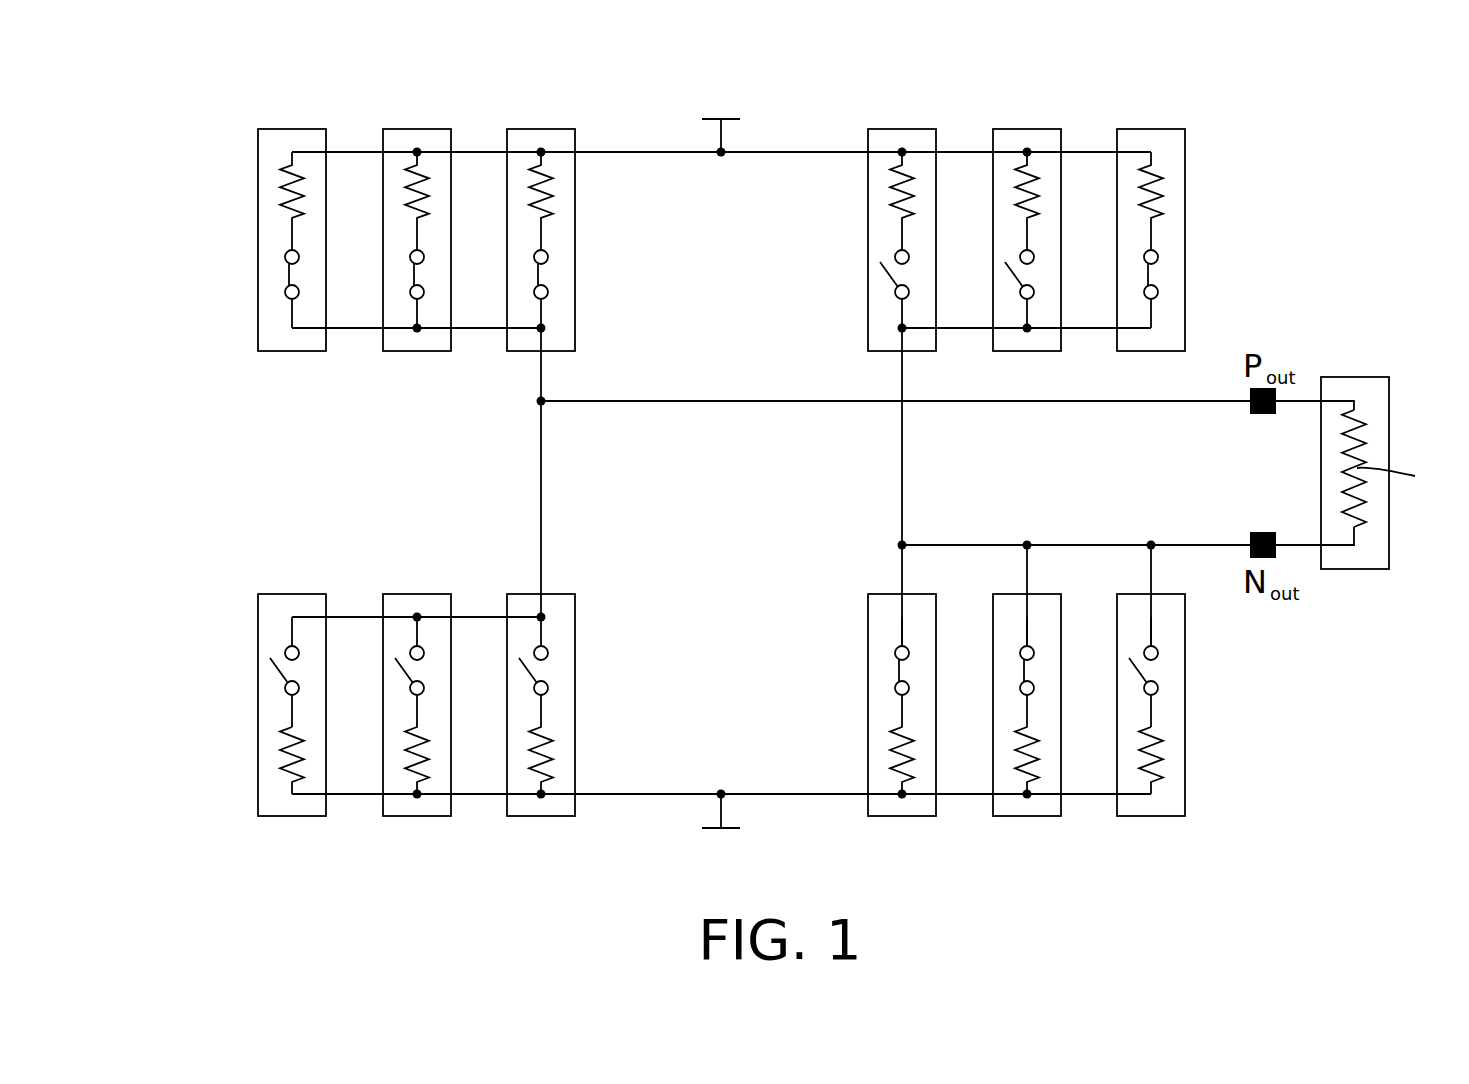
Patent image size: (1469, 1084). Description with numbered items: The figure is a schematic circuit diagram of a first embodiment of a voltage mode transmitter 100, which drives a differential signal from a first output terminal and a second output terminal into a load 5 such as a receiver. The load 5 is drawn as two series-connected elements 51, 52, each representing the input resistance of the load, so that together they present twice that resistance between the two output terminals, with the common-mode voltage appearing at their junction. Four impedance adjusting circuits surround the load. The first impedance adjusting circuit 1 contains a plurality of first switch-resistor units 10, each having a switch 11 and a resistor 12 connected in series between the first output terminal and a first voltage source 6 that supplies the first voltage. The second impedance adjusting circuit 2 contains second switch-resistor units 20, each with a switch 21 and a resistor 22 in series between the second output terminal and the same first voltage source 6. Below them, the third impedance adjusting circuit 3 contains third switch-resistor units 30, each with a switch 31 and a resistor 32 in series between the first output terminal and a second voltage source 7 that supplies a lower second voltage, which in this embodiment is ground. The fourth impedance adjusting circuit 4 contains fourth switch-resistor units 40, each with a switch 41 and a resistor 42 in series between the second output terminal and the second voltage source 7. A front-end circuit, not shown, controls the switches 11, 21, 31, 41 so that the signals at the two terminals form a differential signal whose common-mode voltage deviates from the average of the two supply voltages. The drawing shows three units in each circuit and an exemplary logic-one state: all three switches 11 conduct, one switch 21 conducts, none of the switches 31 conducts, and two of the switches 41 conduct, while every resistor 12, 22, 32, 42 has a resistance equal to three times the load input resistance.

The voltage mode transmitter 100 is at (187, 81).
The first impedance adjusting circuit 1 is at (286, 384).
The first switch-resistor unit 10 is at (292, 128).
The switch 11 is at (285, 273).
The resistor 12 is at (287, 188).
The second impedance adjusting circuit 2 is at (1215, 106).
The second switch-resistor unit 20 is at (902, 128).
The switch 21 is at (1155, 276).
The resistor 22 is at (1157, 194).
The third impedance adjusting circuit 3 is at (225, 606).
The third switch-resistor unit 30 is at (292, 818).
The switch 31 is at (278, 681).
The resistor 32 is at (283, 752).
The fourth impedance adjusting circuit 4 is at (1211, 641).
The fourth switch-resistor unit 40 is at (902, 818).
The switch 41 is at (1155, 670).
The resistor 42 is at (1155, 758).
The load 5 is at (1389, 393).
The input resistance element 51 is at (1355, 450).
The input resistance element 52 is at (1357, 500).
The first voltage source 6 is at (702, 119).
The second voltage source 7 is at (702, 828).